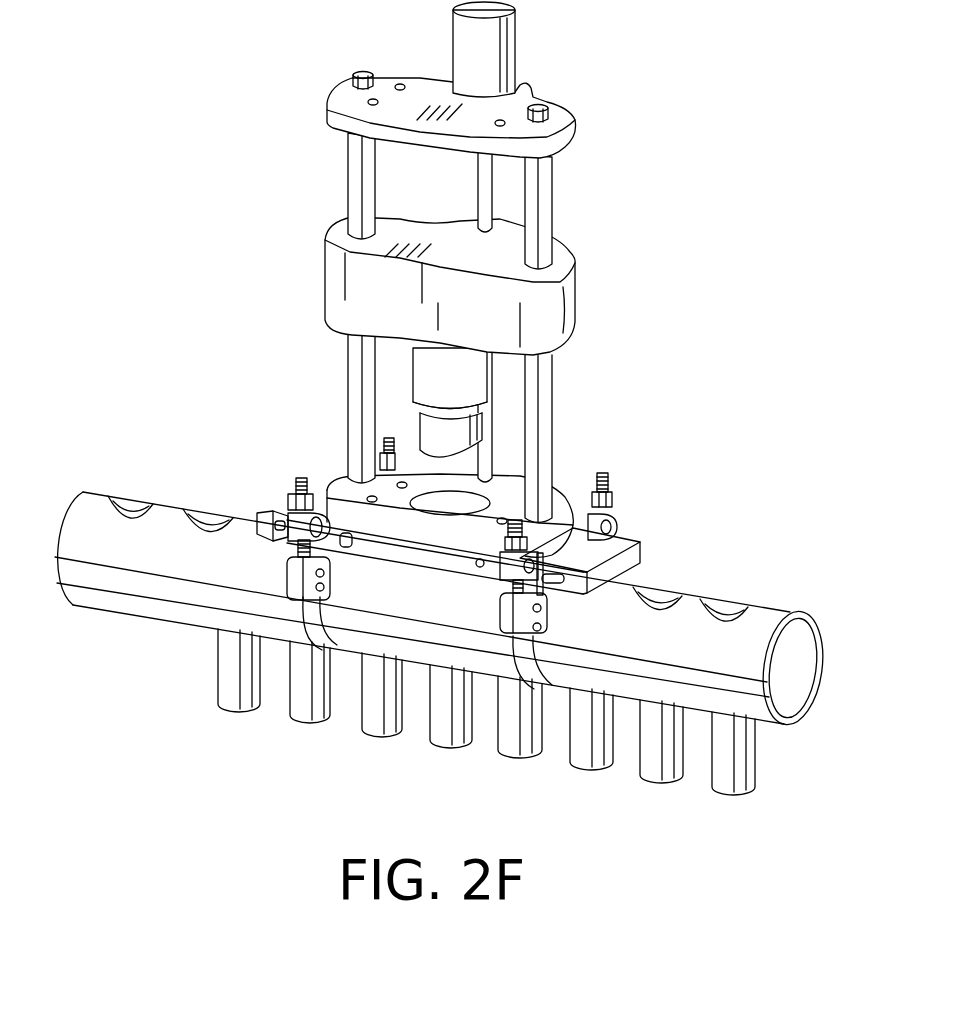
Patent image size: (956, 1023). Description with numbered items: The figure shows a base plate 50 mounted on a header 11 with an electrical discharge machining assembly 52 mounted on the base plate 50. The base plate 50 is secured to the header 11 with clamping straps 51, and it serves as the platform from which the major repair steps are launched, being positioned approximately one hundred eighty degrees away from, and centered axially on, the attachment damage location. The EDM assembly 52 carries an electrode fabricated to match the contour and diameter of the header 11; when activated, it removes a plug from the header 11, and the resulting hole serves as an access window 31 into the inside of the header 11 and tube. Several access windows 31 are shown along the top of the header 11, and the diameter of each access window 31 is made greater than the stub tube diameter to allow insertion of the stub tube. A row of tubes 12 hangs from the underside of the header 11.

The header 11 is at (822, 650).
The outlet pins 12 is at (510, 750).
The access window 31 is at (658, 600).
The base plate 50 is at (284, 508).
The clamping strap 51 is at (300, 478).
The electrical discharge machining (EDM) assembly 52 is at (600, 313).